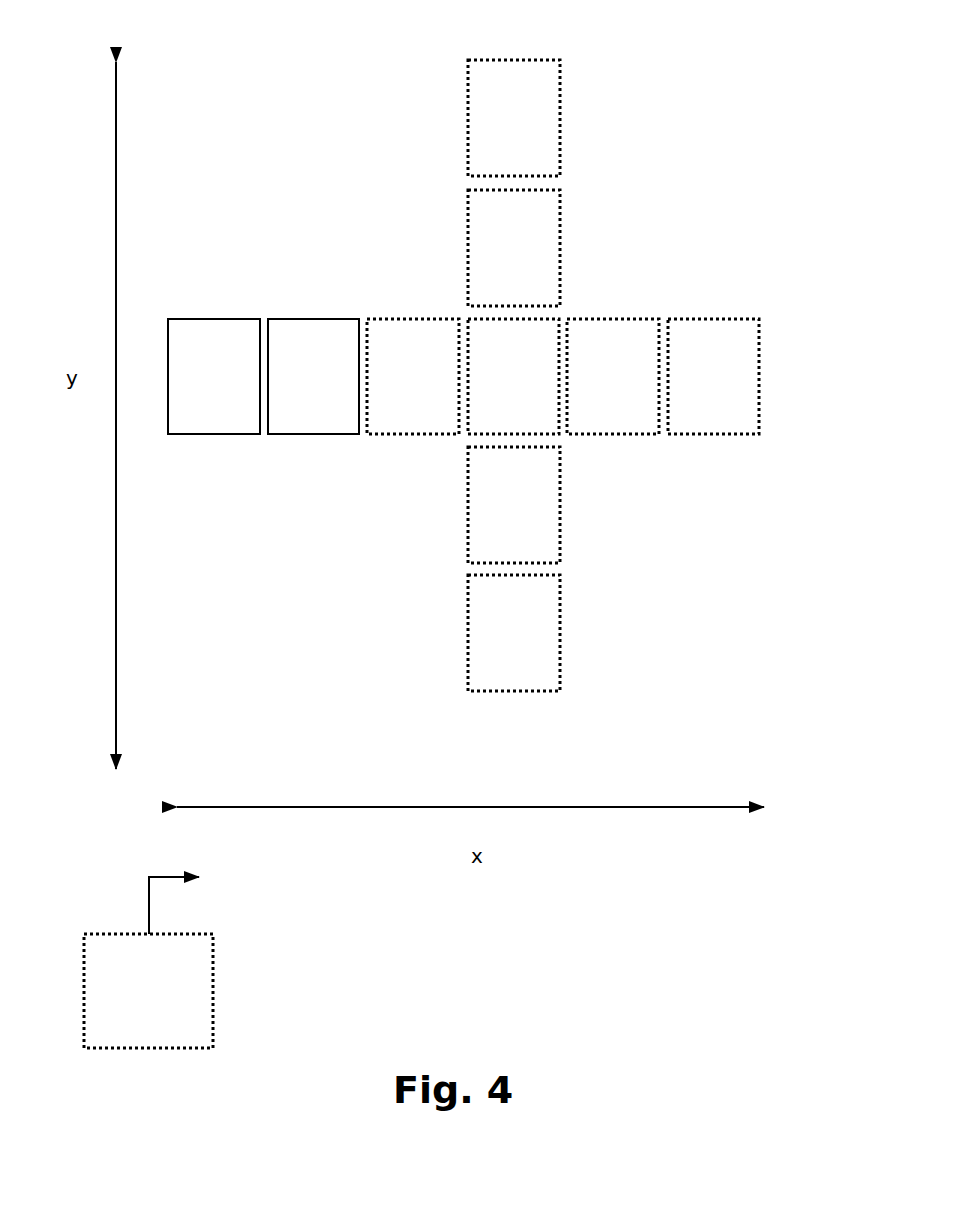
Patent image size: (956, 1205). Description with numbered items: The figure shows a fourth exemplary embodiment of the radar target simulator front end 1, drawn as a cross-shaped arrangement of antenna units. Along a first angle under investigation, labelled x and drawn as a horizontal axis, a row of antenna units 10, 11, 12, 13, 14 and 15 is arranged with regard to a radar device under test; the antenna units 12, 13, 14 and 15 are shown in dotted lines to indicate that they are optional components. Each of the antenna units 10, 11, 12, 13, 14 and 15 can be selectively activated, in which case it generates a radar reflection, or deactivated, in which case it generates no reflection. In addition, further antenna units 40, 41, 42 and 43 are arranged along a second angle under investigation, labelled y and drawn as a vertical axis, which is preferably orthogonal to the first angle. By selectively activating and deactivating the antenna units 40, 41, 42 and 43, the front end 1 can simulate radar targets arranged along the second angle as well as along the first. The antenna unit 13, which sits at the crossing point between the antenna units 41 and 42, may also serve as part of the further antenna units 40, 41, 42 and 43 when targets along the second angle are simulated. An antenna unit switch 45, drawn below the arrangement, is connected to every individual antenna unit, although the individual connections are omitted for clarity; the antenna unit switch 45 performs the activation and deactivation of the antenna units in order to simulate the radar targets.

The radar target simulator front end 1 is at (737, 83).
The antenna unit 10 is at (200, 434).
The antenna unit 11 is at (299, 434).
The antenna unit 12 is at (398, 434).
The antenna unit 13 is at (540, 434).
The antenna unit 14 is at (645, 434).
The antenna unit 15 is at (738, 434).
The antenna unit 40 is at (470, 115).
The antenna unit 41 is at (470, 230).
The antenna unit 42 is at (468, 530).
The antenna unit 43 is at (468, 668).
The antenna unit switch 45 is at (213, 967).